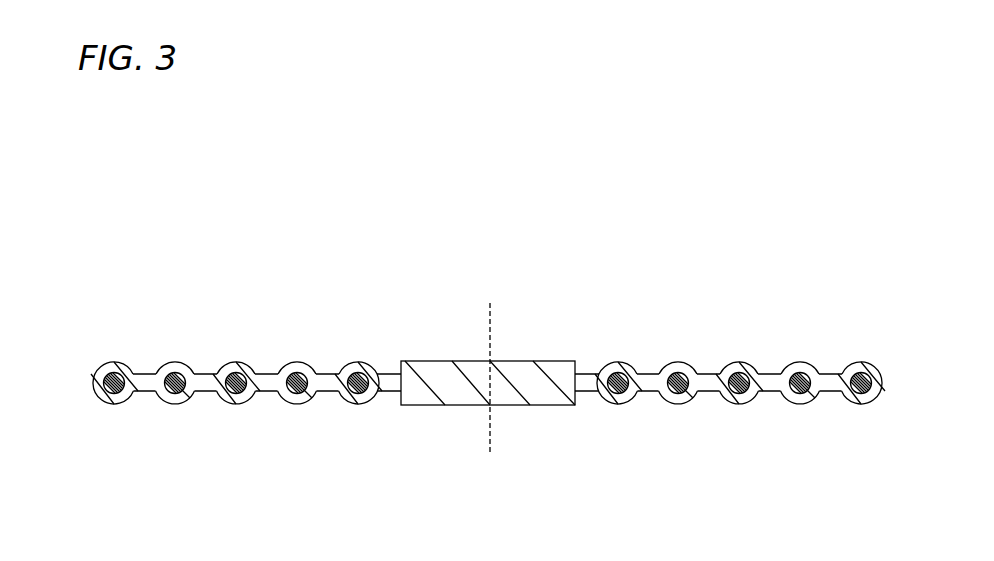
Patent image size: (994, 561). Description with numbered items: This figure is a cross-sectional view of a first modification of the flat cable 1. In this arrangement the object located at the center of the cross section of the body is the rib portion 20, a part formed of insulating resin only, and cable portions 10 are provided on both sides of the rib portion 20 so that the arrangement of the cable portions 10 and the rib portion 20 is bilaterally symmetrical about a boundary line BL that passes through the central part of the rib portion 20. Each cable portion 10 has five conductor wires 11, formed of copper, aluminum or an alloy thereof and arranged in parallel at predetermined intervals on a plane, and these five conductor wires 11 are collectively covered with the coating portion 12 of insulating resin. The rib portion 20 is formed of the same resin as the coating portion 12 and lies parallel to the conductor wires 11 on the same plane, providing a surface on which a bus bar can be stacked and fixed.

The flat cable 1 is at (488, 331).
The cable portion 10 is at (488, 368).
The conductor wire 11 is at (175, 373).
The coating portion 12 is at (227, 372).
The rib portion 20 is at (545, 398).